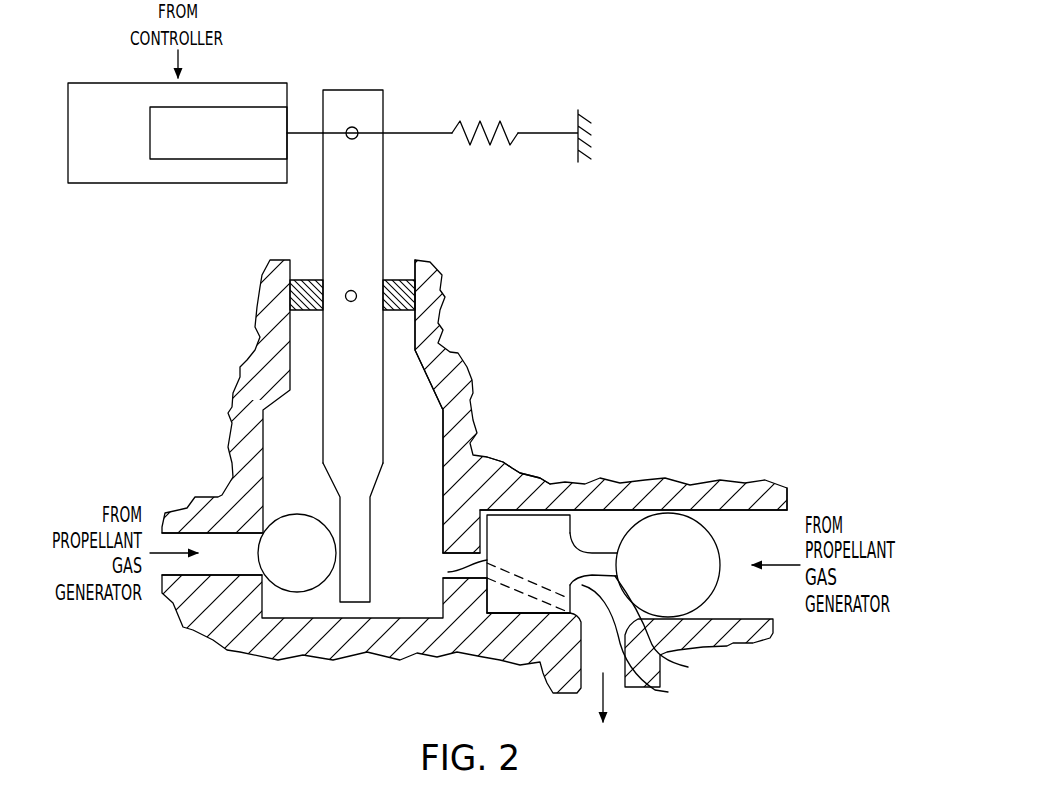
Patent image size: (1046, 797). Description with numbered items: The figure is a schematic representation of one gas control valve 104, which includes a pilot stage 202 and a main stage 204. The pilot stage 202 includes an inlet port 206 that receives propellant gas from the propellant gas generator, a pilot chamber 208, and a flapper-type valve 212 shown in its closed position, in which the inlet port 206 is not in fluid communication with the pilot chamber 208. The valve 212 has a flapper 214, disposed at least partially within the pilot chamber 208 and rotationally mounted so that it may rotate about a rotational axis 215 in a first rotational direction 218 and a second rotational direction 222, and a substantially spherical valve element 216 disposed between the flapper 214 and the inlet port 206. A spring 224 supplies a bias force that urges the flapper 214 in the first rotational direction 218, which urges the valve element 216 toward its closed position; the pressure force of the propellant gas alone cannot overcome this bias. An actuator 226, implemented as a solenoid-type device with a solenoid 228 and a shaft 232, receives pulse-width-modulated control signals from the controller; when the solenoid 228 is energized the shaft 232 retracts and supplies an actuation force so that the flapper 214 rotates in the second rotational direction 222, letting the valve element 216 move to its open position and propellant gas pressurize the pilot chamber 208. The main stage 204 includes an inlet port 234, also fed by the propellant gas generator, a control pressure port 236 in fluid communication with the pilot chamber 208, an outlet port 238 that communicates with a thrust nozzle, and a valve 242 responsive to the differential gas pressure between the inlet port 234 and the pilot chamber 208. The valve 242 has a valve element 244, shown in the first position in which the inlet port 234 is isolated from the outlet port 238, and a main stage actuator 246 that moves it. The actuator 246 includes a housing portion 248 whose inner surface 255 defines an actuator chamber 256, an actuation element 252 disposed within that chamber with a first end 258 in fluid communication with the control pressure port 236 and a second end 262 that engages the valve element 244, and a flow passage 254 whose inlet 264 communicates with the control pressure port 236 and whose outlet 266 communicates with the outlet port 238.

The gas control valve 104 is at (699, 135).
The pilot stage 202 is at (203, 458).
The main stage 204 is at (695, 466).
The pilot stage inlet port 206 is at (224, 540).
The pilot chamber 208 is at (433, 385).
The pilot stage valve 212 is at (313, 494).
The flapper 214 is at (368, 218).
The rotational axis 215 is at (351, 290).
The valve element 216 is at (298, 586).
The first rotational direction 218 is at (443, 72).
The second rotational direction 222 is at (265, 72).
The spring 224 is at (503, 127).
The pilot stage actuator 226 is at (60, 168).
The solenoid 228 is at (200, 152).
The shaft 232 is at (302, 132).
The main stage inlet port 234 is at (770, 517).
The main stage control pressure port 236 is at (448, 562).
The main stage outlet port 238 is at (613, 680).
The main stage valve 242 is at (581, 512).
The main stage valve element 244 is at (722, 580).
The main stage actuator 246 is at (501, 600).
The housing portion 248 is at (515, 500).
The actuation element 252 is at (557, 548).
The flow passage 254 is at (520, 571).
The inner surface 255 is at (616, 516).
The actuator chamber 256 is at (672, 629).
The first end 258 is at (452, 571).
The second end 262 is at (616, 563).
The flow passage inlet 264 is at (467, 578).
The flow passage outlet 266 is at (646, 648).